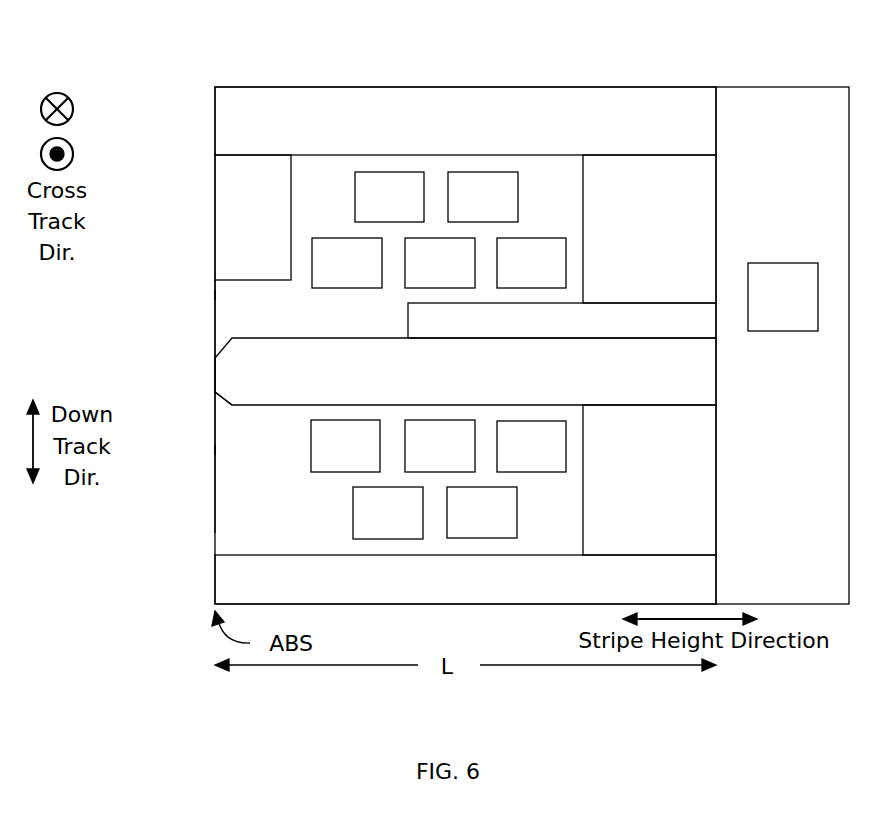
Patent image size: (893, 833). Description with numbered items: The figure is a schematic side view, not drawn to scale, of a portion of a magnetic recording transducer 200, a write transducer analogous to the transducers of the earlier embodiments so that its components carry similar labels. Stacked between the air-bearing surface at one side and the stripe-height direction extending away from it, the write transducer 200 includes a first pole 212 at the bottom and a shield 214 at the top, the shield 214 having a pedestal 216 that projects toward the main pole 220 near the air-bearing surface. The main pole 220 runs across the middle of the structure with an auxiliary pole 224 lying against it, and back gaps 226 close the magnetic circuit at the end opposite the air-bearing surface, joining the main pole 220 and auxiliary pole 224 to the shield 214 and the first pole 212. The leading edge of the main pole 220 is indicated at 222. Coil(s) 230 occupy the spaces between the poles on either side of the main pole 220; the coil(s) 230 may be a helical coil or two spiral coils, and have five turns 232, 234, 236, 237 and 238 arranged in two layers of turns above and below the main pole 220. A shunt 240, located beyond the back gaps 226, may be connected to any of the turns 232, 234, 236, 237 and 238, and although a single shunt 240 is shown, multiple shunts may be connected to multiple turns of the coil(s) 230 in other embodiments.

The magnetic recording transducer 200 is at (428, 50).
The first pole 212 is at (465, 579).
The shield 214 is at (465, 121).
The pedestal 216 is at (253, 217).
The main pole 220 is at (465, 371).
The main pole tip 222 is at (236, 417).
The auxiliary pole 224 is at (562, 320).
The back gaps 226 is at (649, 355).
The coil 230 is at (292, 293).
The turn 232 is at (346, 355).
The turn 234 is at (440, 355).
The turn 236 is at (531, 355).
The turn 237 is at (388, 355).
The turn 238 is at (482, 355).
The shunt 240 is at (783, 297).